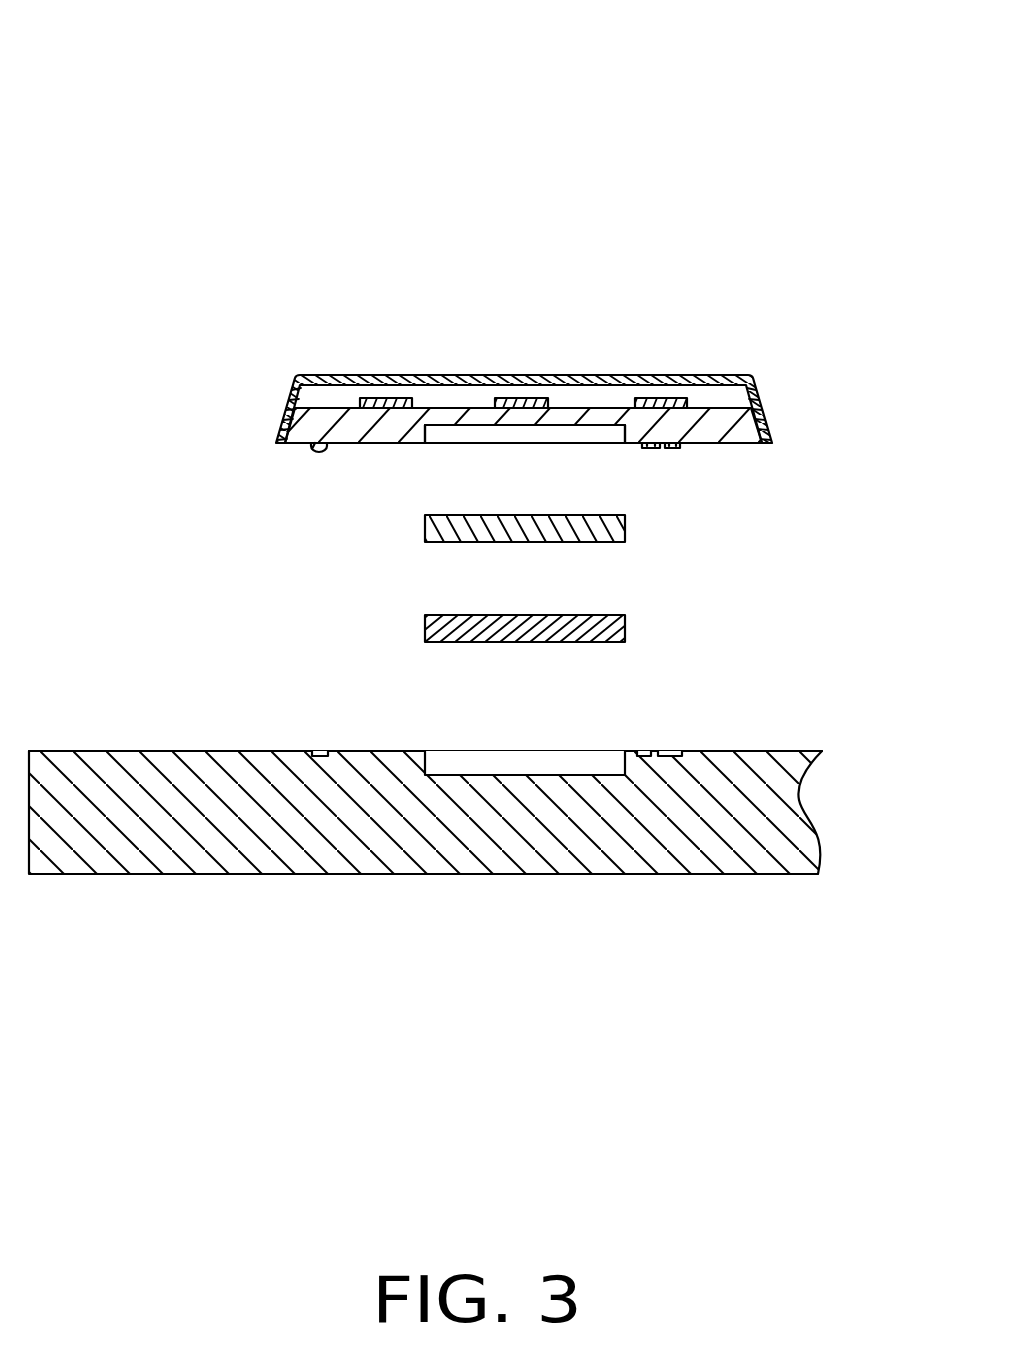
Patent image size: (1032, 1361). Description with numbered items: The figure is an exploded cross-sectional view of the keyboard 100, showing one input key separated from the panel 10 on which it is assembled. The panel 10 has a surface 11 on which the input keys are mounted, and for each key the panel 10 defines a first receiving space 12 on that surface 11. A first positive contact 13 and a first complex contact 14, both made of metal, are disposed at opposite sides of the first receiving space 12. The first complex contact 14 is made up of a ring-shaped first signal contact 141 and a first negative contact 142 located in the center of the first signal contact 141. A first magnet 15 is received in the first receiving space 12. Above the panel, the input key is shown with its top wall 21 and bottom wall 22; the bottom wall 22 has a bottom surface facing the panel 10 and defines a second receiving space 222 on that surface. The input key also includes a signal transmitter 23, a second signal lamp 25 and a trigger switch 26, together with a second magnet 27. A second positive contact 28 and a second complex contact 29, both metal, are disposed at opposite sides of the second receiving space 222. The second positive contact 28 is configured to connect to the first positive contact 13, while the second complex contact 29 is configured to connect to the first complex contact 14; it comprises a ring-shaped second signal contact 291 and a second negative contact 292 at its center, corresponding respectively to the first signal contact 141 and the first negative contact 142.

The keyboard 100 is at (328, 88).
The panel 10 is at (793, 833).
The surface 11 is at (782, 750).
The first receiving space 12 is at (537, 762).
The first positive contact 13 is at (318, 752).
The first complex contact 14 is at (783, 655).
The first signal contact 141 is at (680, 750).
The first negative contact 142 is at (658, 750).
The first magnet 15 is at (425, 630).
The top wall 21 is at (731, 380).
The bottom wall 22 is at (740, 420).
The second receiving space 222 is at (463, 432).
The signal transmitter 23 is at (660, 403).
The second signal lamp 25 is at (383, 400).
The trigger switch 26 is at (508, 405).
The second magnet 27 is at (425, 528).
The second positive contact 28 is at (317, 448).
The second complex contact 29 is at (812, 443).
The second signal contact 291 is at (682, 445).
The second negative contact 292 is at (660, 445).